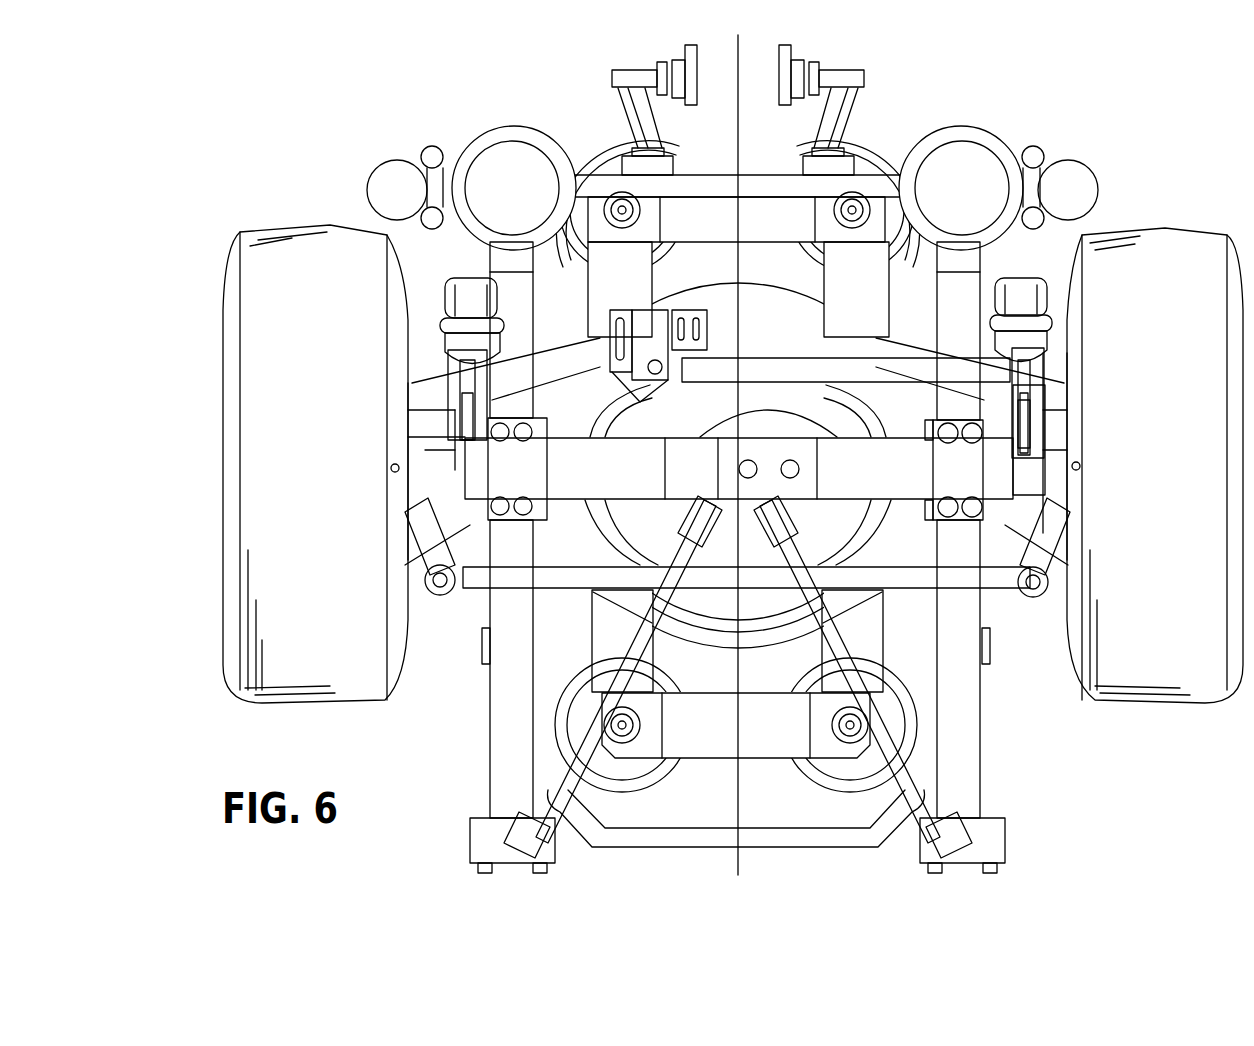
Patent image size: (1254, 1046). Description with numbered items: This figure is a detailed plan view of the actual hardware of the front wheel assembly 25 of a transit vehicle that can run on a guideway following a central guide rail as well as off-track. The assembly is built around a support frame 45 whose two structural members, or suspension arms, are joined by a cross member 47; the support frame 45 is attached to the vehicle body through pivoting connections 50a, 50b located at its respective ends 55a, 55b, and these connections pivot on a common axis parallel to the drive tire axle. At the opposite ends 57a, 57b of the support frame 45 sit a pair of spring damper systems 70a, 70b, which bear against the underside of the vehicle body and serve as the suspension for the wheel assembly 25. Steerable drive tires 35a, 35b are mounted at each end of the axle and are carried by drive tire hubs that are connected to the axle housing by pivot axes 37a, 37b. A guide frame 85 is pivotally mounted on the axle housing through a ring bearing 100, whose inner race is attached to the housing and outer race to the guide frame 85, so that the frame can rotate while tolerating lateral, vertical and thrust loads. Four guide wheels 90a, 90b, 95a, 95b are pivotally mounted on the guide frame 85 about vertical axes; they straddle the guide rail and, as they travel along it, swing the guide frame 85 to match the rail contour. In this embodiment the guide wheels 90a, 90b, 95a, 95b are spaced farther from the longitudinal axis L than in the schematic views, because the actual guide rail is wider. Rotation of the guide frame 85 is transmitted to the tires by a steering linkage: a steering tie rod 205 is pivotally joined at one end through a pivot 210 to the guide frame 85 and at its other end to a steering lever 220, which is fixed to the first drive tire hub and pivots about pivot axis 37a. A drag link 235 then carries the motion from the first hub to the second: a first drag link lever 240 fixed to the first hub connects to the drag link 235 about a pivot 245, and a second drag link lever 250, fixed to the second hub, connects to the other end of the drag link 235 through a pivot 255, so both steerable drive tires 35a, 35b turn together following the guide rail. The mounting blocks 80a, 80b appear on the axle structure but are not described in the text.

The front wheel assembly 25 is at (399, 139).
The steerable drive tire 35a is at (1170, 238).
The steerable drive tire 35b is at (256, 296).
The pivot axis 37a is at (1082, 468).
The pivot axis 37b is at (390, 470).
The support frame 45 is at (491, 748).
The cross member 47 is at (762, 838).
The pivoting connection 50a is at (990, 854).
The pivoting connection 50b is at (470, 850).
The end of support frame 55a is at (985, 790).
The end of support frame 55b is at (490, 800).
The end of support frame 57a is at (978, 261).
The end of support frame 57b is at (488, 261).
The spring damper system 70a is at (975, 160).
The spring damper system 70b is at (500, 160).
The mounting block 80a is at (955, 472).
The mounting block 80b is at (505, 480).
The guide frame 85 is at (721, 740).
The guide wheel 90a is at (778, 678).
The guide wheel 90b is at (656, 666).
The guide wheel 95a is at (868, 150).
The guide wheel 95b is at (592, 150).
The ring bearing 100 is at (640, 418).
The steering tie rod 205 is at (815, 350).
The pivot 210 is at (650, 325).
The steering lever 220 is at (1052, 392).
The drag link 235 is at (1014, 647).
The first drag link lever 240 is at (1040, 545).
The pivot 245 is at (1045, 592).
The second drag link lever 250 is at (412, 540).
The pivot 255 is at (436, 582).
The longitudinal axis L is at (742, 128).